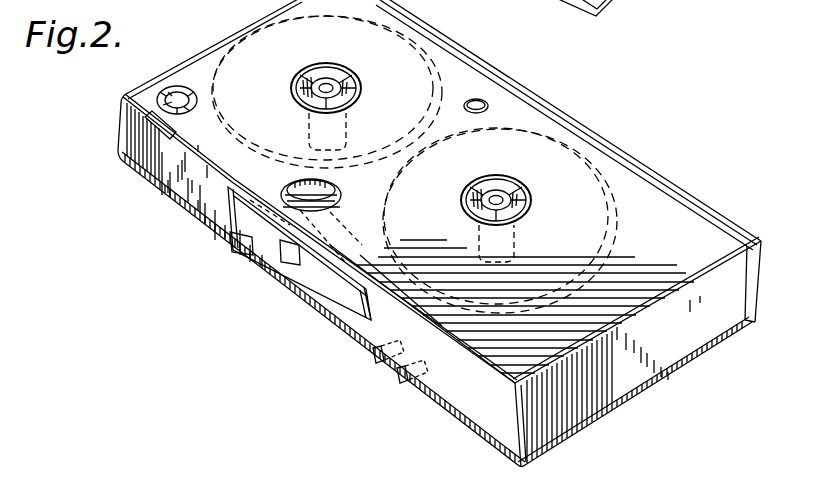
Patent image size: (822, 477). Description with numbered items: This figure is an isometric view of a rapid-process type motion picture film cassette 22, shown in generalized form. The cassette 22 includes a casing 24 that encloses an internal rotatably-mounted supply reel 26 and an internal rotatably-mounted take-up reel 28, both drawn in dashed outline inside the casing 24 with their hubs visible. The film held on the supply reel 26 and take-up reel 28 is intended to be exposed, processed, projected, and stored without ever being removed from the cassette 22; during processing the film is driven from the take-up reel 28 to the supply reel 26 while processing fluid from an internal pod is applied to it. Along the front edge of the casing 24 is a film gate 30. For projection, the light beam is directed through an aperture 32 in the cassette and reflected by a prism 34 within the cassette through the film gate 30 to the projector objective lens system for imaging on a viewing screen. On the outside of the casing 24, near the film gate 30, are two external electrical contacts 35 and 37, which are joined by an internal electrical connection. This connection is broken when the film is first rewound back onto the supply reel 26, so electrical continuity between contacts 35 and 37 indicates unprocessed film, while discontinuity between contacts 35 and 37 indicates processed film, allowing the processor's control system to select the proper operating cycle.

The motion picture film cassette 22 is at (711, 203).
The casing 24 is at (508, 107).
The supply reel 26 is at (600, 163).
The take-up reel 28 is at (424, 52).
The film gate 30 is at (225, 218).
The aperture 32 is at (303, 200).
The prism 34 is at (367, 300).
The external electrical contact 35 is at (379, 362).
The external electrical contact 37 is at (402, 383).